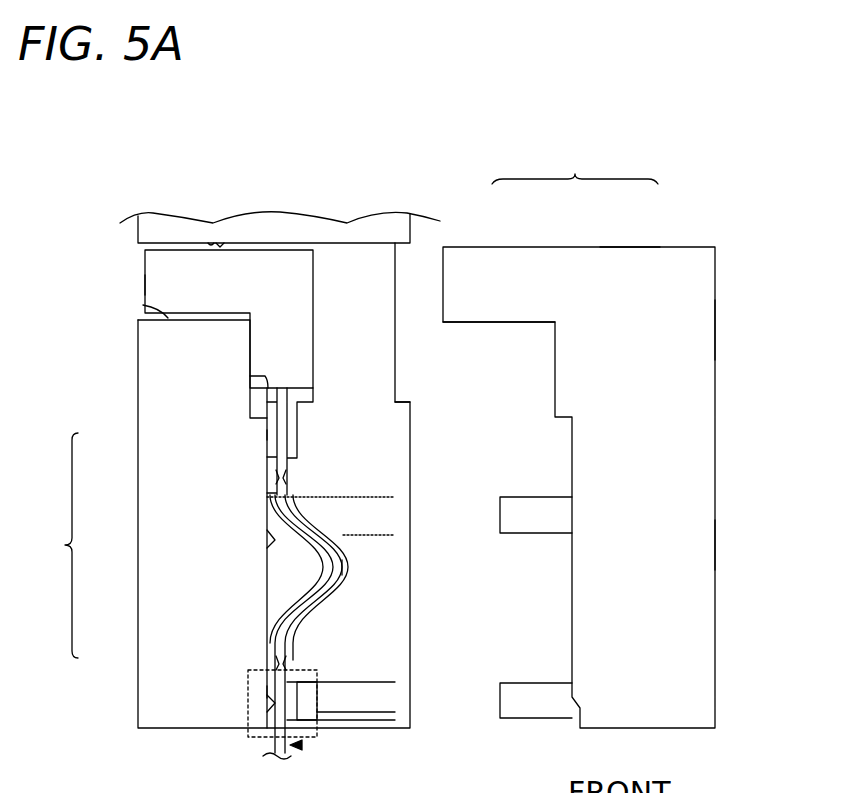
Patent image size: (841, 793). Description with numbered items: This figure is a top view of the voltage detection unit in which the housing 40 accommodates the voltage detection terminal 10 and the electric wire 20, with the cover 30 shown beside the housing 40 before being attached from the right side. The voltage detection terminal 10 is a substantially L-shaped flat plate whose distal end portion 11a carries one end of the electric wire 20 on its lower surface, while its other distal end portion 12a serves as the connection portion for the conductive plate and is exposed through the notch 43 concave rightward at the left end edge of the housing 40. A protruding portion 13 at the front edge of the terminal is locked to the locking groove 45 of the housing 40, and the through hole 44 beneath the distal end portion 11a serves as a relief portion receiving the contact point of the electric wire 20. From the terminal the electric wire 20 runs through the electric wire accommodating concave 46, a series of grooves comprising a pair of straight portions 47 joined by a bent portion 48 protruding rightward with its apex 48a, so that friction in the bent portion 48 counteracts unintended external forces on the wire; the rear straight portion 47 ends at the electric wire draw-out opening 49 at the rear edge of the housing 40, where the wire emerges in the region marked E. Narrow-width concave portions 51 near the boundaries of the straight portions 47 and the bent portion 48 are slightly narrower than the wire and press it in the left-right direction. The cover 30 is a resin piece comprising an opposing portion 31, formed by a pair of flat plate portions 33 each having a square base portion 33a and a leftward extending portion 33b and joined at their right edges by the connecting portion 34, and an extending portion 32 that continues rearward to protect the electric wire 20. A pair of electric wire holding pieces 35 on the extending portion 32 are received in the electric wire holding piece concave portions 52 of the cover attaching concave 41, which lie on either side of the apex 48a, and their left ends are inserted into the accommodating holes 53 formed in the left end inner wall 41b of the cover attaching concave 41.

The voltage detection terminal 10 is at (165, 236).
The distal end portion of the first portion 11a is at (298, 352).
The distal end portion of the second portion 12a is at (158, 285).
The protruding portion 13 is at (220, 247).
The electric wire 20 is at (302, 745).
The cover 30 is at (694, 208).
The opposing portion 31 is at (581, 132).
The extending portion 32 is at (695, 543).
The flat plate portion 33 is at (575, 165).
The base portion 33a is at (633, 343).
The extending portion of the flat plate portion 33b is at (512, 280).
The connecting portion 34 is at (715, 332).
The electric wire holding piece 35 is at (527, 495).
The housing 40 is at (279, 188).
The cover attaching concave 41 is at (350, 263).
The left end inner wall of the cover attaching concave 41b is at (270, 602).
The notch 43 is at (143, 305).
The through hole 44 is at (266, 384).
The locking groove 45 is at (214, 247).
The electric wire accommodating concave 46 is at (55, 545).
The straight portion 47 is at (268, 434).
The bent portion 48 is at (332, 568).
The apex of the bent portion 48a is at (350, 567).
The electric wire draw-out opening 49 is at (268, 740).
The narrow-width concave portion 51 is at (275, 472).
The electric wire holding piece concave portion 52 is at (373, 513).
The accommodating hole 53 is at (308, 542).
The portion E is at (317, 693).